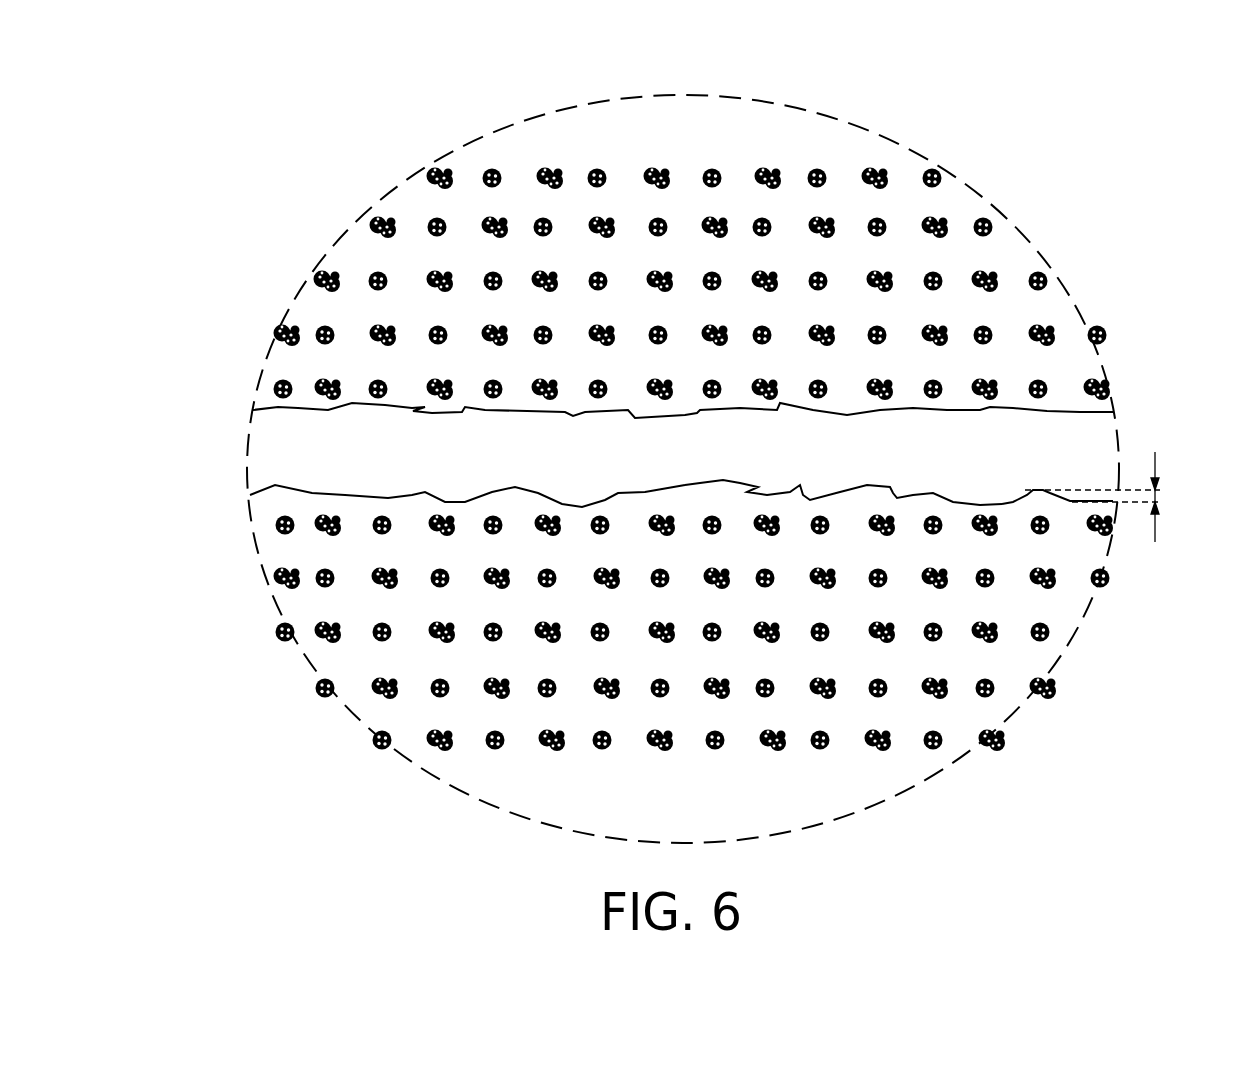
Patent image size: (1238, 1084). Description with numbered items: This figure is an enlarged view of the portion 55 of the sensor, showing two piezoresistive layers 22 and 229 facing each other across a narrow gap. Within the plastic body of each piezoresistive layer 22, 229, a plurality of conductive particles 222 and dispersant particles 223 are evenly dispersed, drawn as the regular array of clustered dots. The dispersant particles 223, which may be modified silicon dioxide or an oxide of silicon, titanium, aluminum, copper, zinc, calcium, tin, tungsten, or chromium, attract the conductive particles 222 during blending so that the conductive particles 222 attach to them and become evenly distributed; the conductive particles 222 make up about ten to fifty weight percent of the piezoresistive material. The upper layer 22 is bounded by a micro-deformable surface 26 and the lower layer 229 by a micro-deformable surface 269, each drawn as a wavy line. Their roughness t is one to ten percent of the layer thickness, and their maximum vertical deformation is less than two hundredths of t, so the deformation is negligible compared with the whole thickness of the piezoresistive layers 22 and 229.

The portion 55 is at (165, 152).
The piezoresistive layer 22 is at (683, 208).
The micro-deformable surface 26 is at (1080, 412).
The conductive particles 222 is at (612, 513).
The dispersant particles 223 is at (880, 513).
The micro-deformable surface 269 is at (1002, 505).
The piezoresistive layer 229 is at (632, 720).